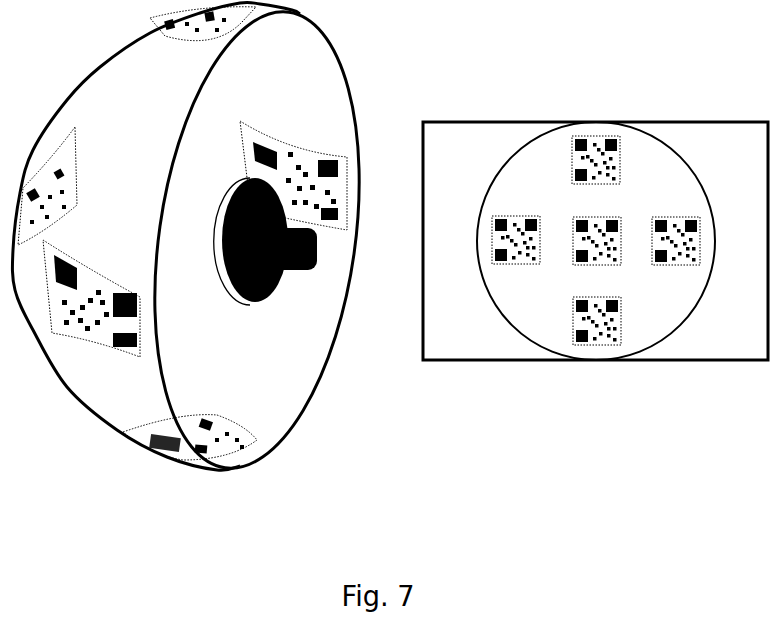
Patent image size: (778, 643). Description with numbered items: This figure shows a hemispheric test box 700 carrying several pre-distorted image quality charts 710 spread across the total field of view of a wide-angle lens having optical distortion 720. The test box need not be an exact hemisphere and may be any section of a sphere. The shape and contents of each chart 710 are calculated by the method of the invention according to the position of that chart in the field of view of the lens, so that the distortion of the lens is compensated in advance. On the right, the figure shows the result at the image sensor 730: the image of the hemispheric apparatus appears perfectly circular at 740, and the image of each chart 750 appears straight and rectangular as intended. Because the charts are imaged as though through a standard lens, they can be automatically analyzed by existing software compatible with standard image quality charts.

The hemispheric test box 700 is at (199, 240).
The image quality charts 710 is at (91, 315).
The wide-angle lens having optical distortion 720 is at (265, 241).
The image sensor 730 is at (595, 225).
The circular image of the hemispheric apparatus 740 is at (588, 241).
The image of each chart 750 is at (626, 344).